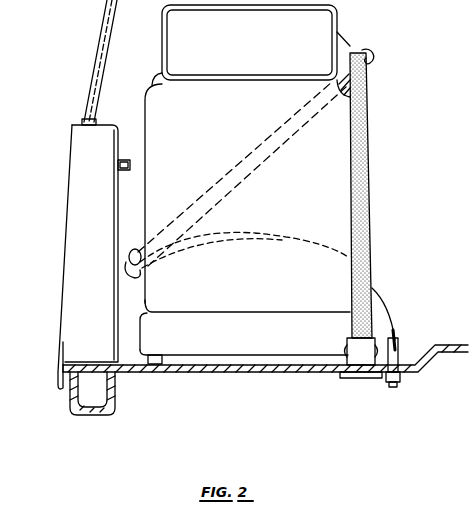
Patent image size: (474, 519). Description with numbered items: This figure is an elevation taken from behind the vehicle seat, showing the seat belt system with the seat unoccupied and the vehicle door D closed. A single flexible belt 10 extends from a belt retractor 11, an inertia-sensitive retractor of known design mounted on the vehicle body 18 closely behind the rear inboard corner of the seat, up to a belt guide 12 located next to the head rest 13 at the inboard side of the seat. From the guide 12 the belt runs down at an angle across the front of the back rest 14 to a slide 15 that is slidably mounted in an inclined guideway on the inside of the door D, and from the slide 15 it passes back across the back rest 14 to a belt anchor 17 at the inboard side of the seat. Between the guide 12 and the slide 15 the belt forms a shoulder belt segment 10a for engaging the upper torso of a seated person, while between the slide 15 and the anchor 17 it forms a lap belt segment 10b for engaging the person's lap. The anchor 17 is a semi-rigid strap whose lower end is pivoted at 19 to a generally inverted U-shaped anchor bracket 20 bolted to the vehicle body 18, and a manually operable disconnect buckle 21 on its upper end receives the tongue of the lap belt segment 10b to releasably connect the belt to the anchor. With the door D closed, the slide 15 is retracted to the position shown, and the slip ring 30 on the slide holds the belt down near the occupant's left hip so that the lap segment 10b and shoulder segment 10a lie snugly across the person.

The vehicle door D is at (85, 137).
The flexible belt 10 is at (373, 195).
The shoulder belt segment 10a is at (247, 146).
The lap belt segment 10b is at (245, 238).
The belt retractor 11 is at (350, 345).
The belt guide 12 is at (375, 56).
The head rest 13 is at (260, 44).
The back rest 14 is at (298, 196).
The slide 15 is at (128, 275).
The belt anchor 17 is at (396, 318).
The vehicle body 18 is at (272, 373).
The pivot 19 is at (397, 355).
The anchor bracket 20 is at (400, 358).
The disconnect buckle 21 is at (372, 290).
The slip ring 30 is at (142, 266).